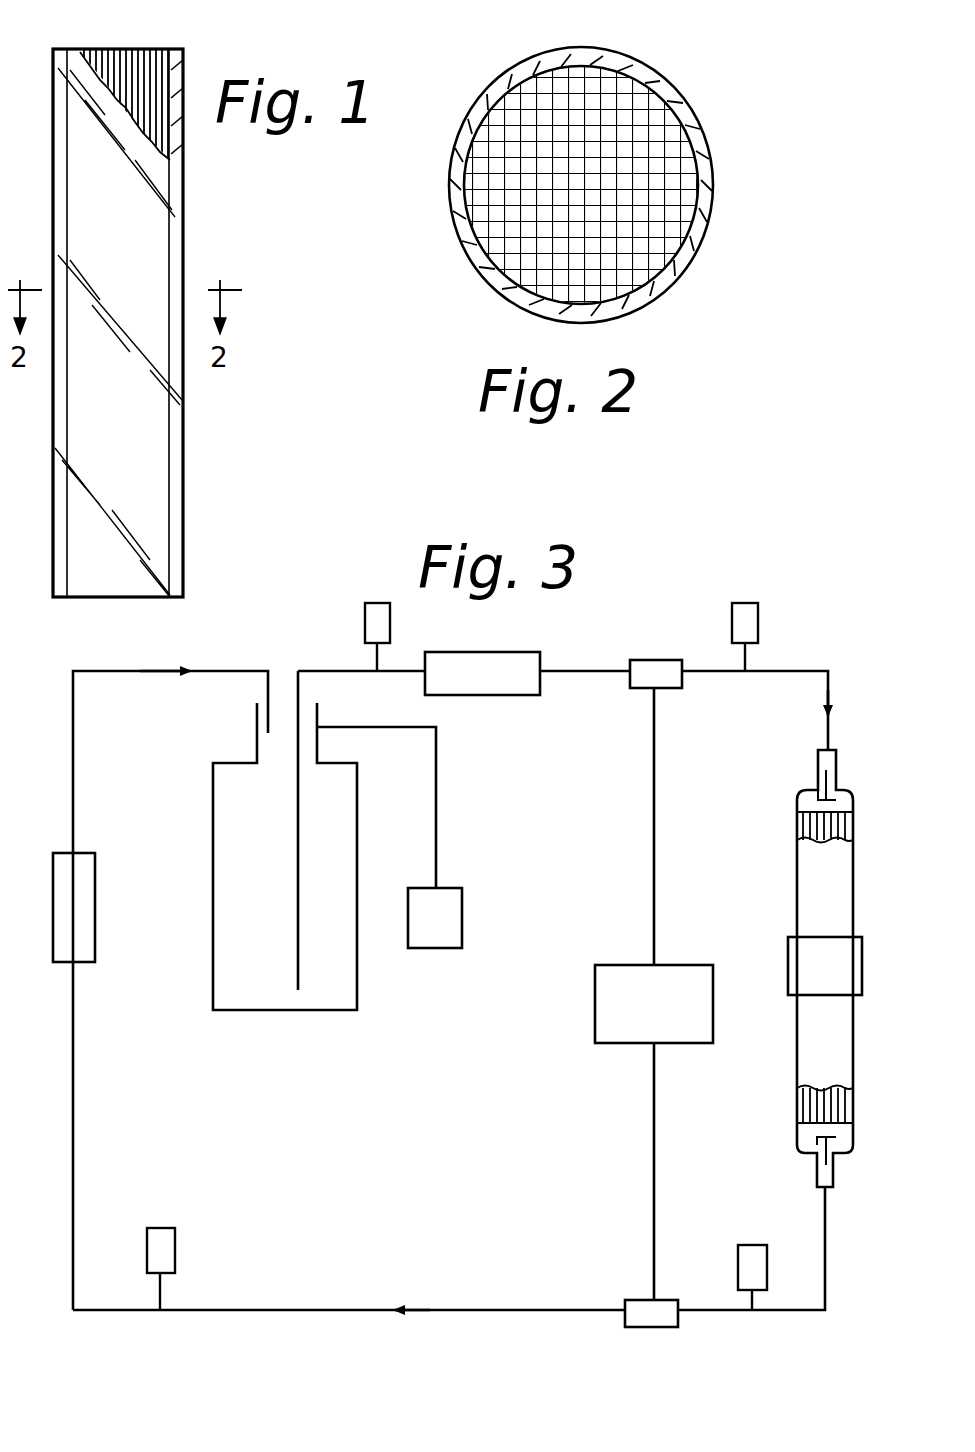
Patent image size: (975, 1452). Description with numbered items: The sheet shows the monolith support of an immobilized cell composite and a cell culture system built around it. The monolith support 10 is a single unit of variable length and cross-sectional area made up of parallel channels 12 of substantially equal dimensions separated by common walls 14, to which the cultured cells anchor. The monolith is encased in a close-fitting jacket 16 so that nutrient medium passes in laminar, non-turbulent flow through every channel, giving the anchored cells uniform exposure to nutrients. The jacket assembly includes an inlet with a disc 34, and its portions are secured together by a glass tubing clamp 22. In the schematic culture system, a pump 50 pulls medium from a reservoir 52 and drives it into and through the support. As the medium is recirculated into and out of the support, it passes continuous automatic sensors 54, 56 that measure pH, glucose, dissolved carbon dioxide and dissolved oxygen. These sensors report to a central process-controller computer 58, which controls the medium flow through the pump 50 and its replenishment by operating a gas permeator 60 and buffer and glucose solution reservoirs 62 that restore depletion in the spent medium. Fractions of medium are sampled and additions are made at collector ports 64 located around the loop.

In FIG. 1, the monolith support 10 is at (184, 237).
In FIG. 2, the monolith support 10 is at (710, 183).
In FIG. 3, the monolith support 10 is at (808, 862).
In FIG. 1, the parallel channels 12 is at (140, 60).
In FIG. 2, the parallel channels 12 is at (643, 240).
In FIG. 2, the common walls 14 is at (530, 110).
In FIG. 1, the close-fitting jacket 16 is at (182, 138).
In FIG. 2, the close-fitting jacket 16 is at (700, 240).
In FIG. 3, the glass tubing clamp 22 is at (788, 960).
In FIG. 3, the disc 34 is at (818, 798).
In FIG. 3, the pump 50 is at (492, 695).
In FIG. 3, the reservoir 52 is at (310, 1010).
In FIG. 3, the sensor 54 is at (656, 670).
In FIG. 3, the sensor 56 is at (640, 1305).
In FIG. 3, the process-controller computer 58 is at (670, 1020).
In FIG. 3, the gas permeator 60 is at (88, 905).
In FIG. 3, the buffer and glucose solution reservoirs 62 is at (454, 936).
In FIG. 3, the collector ports 64 is at (365, 622).